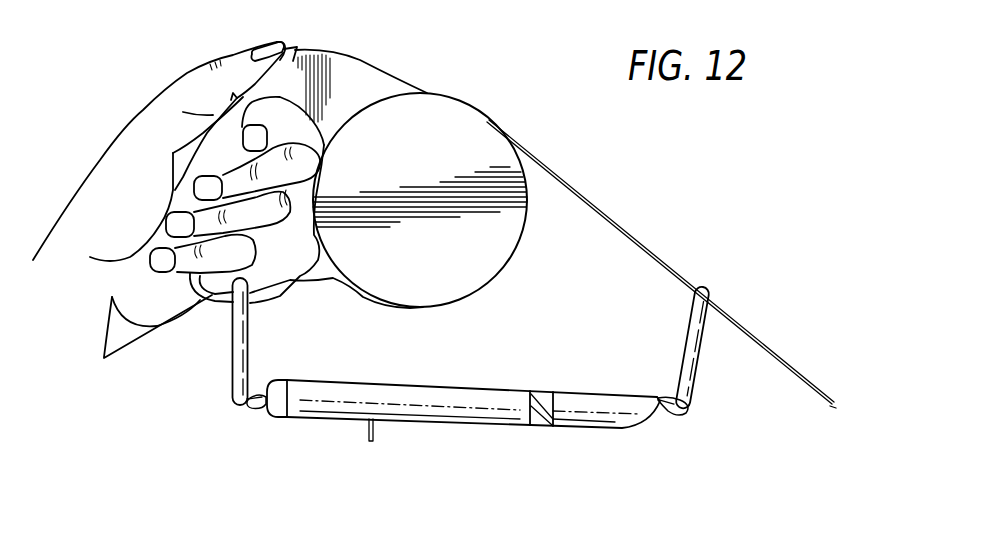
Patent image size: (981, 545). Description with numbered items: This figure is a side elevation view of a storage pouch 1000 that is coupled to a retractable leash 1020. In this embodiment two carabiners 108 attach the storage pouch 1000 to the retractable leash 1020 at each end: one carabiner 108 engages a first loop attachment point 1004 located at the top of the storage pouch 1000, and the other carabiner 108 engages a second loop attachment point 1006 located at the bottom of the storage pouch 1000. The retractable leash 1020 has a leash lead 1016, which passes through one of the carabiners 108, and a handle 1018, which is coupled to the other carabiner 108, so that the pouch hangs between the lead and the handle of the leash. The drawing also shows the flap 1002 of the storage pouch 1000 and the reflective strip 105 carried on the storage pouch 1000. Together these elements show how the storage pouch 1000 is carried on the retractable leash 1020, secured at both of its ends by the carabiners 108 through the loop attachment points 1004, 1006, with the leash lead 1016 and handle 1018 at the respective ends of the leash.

The storage pouch 1000 is at (281, 459).
The flap 1002 is at (321, 426).
The first loop attachment point 1004 is at (253, 405).
The second loop attachment point 1006 is at (668, 411).
The reflective strip 105 is at (540, 421).
The carabiner 108 is at (233, 356).
The leash lead 1016 is at (633, 232).
The handle 1018 is at (215, 297).
The retractable leash 1020 is at (432, 107).